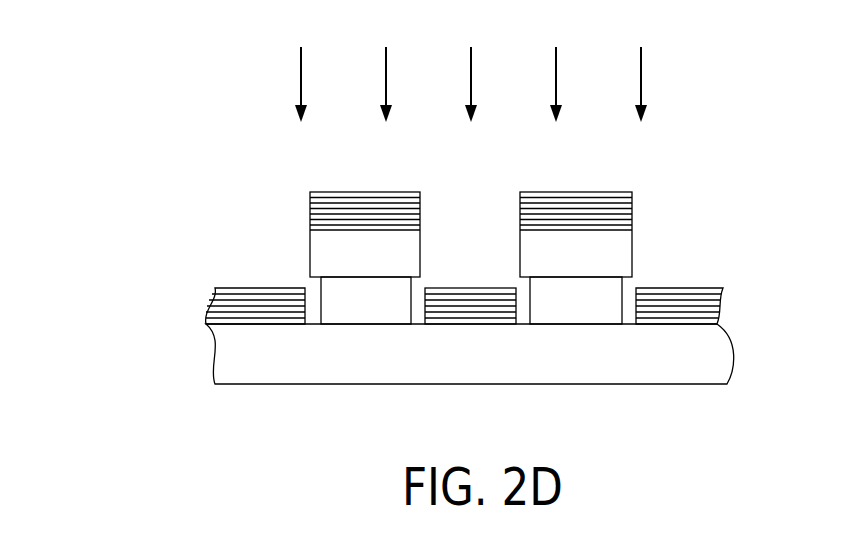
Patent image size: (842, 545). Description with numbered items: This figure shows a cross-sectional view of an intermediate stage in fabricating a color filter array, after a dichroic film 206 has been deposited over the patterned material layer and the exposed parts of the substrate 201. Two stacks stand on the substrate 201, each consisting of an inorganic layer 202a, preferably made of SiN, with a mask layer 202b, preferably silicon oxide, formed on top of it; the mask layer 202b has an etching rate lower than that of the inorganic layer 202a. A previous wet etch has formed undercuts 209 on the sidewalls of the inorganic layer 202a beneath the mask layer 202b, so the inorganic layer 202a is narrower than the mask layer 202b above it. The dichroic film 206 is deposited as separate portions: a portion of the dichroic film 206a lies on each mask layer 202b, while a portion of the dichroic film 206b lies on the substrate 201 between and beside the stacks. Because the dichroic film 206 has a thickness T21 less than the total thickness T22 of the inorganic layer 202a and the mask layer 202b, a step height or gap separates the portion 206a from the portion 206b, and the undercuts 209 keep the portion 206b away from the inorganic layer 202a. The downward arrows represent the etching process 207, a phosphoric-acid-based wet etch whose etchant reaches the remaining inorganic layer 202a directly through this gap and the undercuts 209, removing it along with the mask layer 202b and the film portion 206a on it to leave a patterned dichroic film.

The substrate 201 is at (729, 353).
The inorganic layer 202a is at (400, 316).
The mask layer 202b is at (400, 269).
The dichroic film 206 is at (168, 110).
The portion of the dichroic film on the mask layer 206a is at (327, 192).
The portion of the dichroic film on the substrate 206b is at (284, 288).
The etching process 207 is at (643, 88).
The undercuts 209 is at (418, 288).
The thickness of the dichroic film T21 is at (210, 324).
The total thickness of the inorganic layer and the mask layer T22 is at (636, 229).